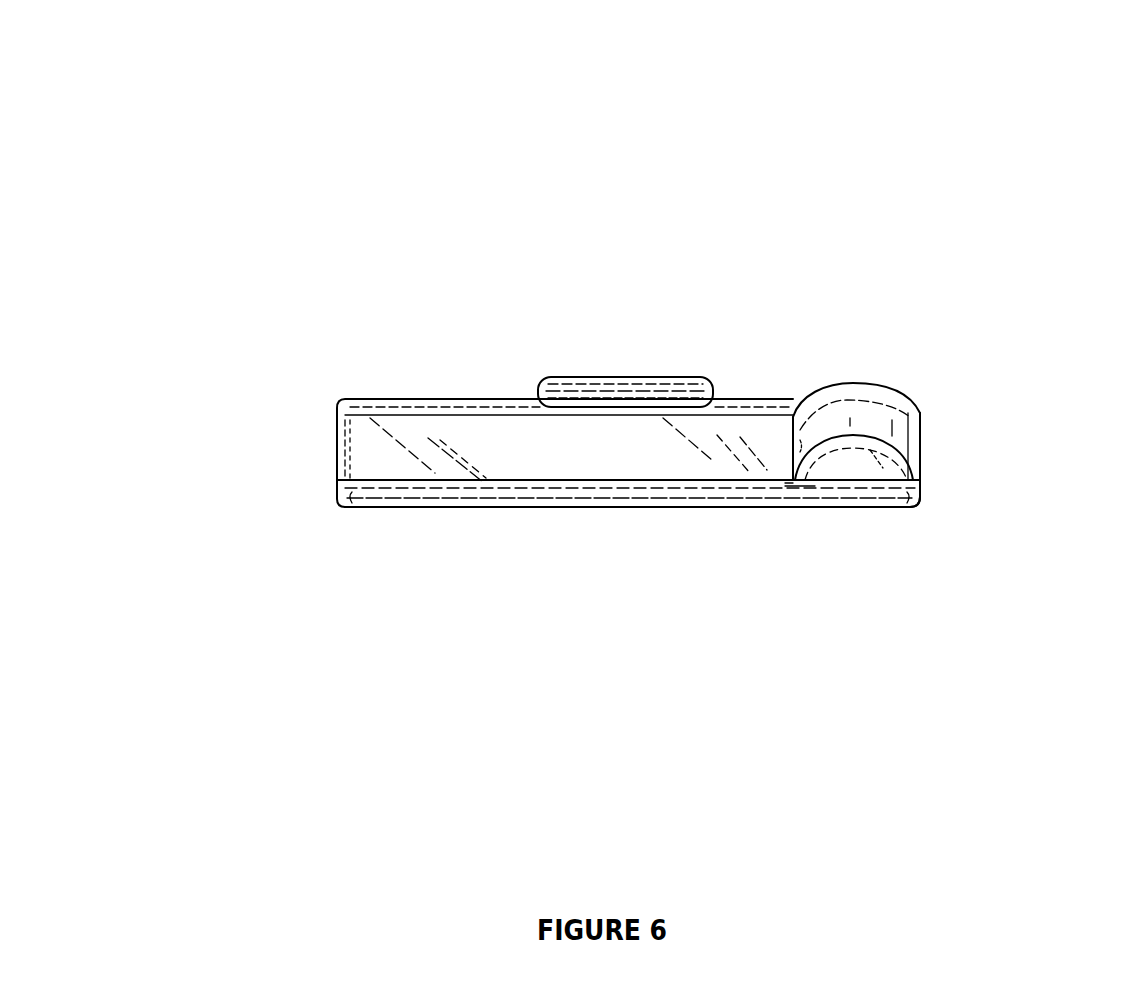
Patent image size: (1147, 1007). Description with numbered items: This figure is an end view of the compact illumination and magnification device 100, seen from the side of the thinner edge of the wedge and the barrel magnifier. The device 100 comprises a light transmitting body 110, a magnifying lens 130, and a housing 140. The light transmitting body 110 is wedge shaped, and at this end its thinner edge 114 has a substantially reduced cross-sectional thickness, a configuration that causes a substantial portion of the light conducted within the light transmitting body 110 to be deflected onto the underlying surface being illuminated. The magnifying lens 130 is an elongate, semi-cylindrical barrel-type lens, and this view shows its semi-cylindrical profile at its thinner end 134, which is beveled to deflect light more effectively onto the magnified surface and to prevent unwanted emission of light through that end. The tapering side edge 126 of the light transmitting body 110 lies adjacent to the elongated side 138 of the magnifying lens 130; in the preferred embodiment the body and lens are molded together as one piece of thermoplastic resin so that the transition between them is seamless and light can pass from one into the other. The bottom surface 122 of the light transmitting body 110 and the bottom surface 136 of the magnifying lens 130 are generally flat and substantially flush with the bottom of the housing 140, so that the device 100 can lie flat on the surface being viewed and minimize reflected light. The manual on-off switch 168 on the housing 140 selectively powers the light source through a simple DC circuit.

The compact illumination and magnification device 100 is at (825, 168).
The light transmitting body 110 is at (425, 445).
The thinner edge 114 is at (400, 492).
The bottom surface 122 is at (449, 530).
The tapering side edge 126 is at (770, 476).
The magnifying lens 130 is at (867, 423).
The thinner end 134 is at (867, 467).
The bottom surface 136 is at (861, 530).
The elongated side 138 is at (806, 420).
The housing 140 is at (452, 397).
The manual on-off switch 168 is at (598, 385).